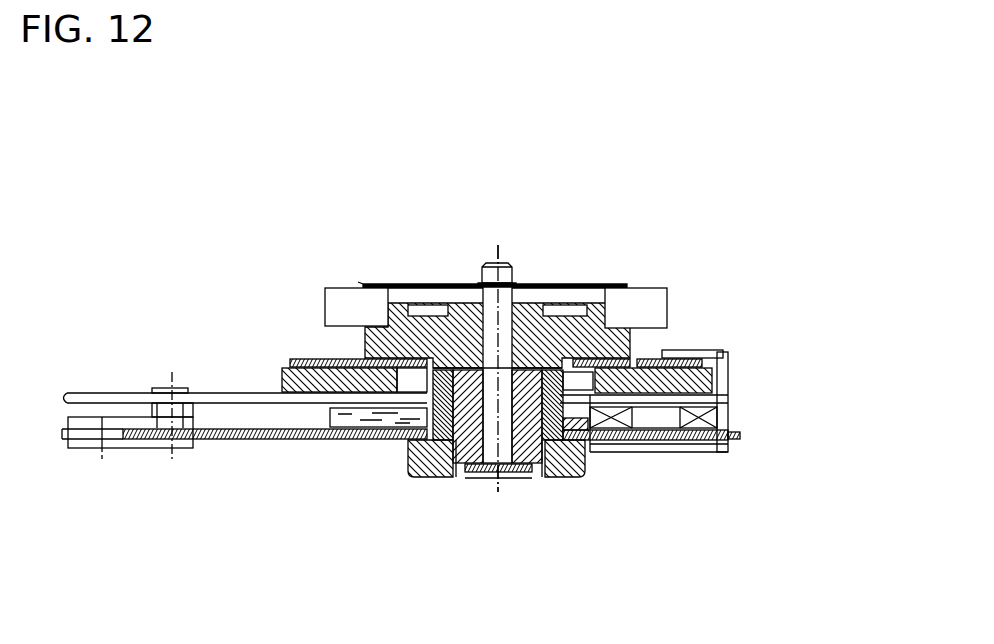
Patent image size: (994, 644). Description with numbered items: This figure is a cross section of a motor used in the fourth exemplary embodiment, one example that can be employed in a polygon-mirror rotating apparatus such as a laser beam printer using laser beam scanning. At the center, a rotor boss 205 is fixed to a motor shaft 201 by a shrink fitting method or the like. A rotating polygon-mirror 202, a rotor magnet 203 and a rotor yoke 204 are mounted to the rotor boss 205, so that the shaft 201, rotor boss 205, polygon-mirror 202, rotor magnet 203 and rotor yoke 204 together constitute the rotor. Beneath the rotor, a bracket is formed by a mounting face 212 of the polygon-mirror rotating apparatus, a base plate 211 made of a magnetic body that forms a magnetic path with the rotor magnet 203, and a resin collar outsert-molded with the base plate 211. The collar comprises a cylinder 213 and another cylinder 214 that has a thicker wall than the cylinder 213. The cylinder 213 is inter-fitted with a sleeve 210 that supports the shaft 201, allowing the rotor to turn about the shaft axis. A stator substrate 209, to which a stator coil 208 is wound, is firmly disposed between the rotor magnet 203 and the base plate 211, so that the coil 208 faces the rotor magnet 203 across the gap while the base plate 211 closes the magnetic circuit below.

The motor shaft 201 is at (500, 273).
The rotating polygon-mirror 202 is at (637, 303).
The rotor magnet 203 is at (725, 352).
The rotor yoke 204 is at (647, 353).
The rotor boss 205 is at (540, 330).
The stator coil 208 is at (712, 418).
The stator substrate 209 is at (712, 400).
The sleeve 210 is at (550, 475).
The base plate 211 is at (556, 420).
The mounting face 212 is at (710, 453).
The cylinder 213 is at (594, 446).
The cylinder 214 is at (585, 472).